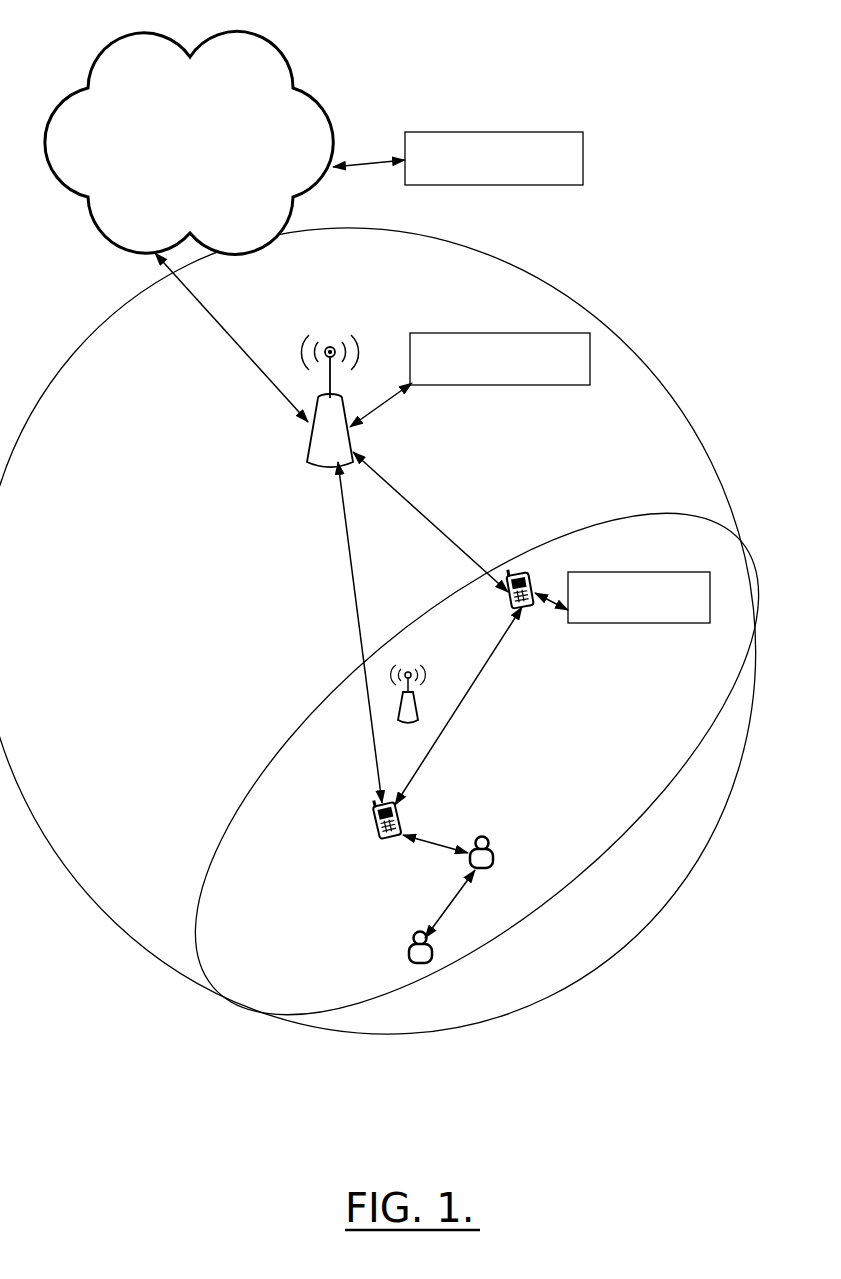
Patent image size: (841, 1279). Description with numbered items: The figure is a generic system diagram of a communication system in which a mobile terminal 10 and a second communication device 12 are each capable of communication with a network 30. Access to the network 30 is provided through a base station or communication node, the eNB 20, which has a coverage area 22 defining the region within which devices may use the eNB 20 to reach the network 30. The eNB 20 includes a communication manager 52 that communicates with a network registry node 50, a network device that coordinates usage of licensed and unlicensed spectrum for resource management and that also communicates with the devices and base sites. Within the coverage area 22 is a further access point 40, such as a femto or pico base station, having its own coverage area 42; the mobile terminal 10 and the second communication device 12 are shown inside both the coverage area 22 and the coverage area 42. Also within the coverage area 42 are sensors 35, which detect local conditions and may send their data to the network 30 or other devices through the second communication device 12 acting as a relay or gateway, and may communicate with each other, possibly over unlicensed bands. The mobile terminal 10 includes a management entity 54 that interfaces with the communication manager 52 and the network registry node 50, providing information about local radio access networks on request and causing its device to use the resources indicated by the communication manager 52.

The mobile terminal 10 is at (527, 607).
The second communication device 12 is at (375, 825).
The eNB 20 is at (315, 450).
The coverage area 22 is at (628, 350).
The network 30 is at (325, 100).
The sensors 35 is at (482, 868).
The access point 40 is at (415, 693).
The coverage area 42 is at (230, 823).
The network registry node 50 is at (530, 132).
The communication manager 52 is at (442, 333).
The management entity 54 is at (692, 623).